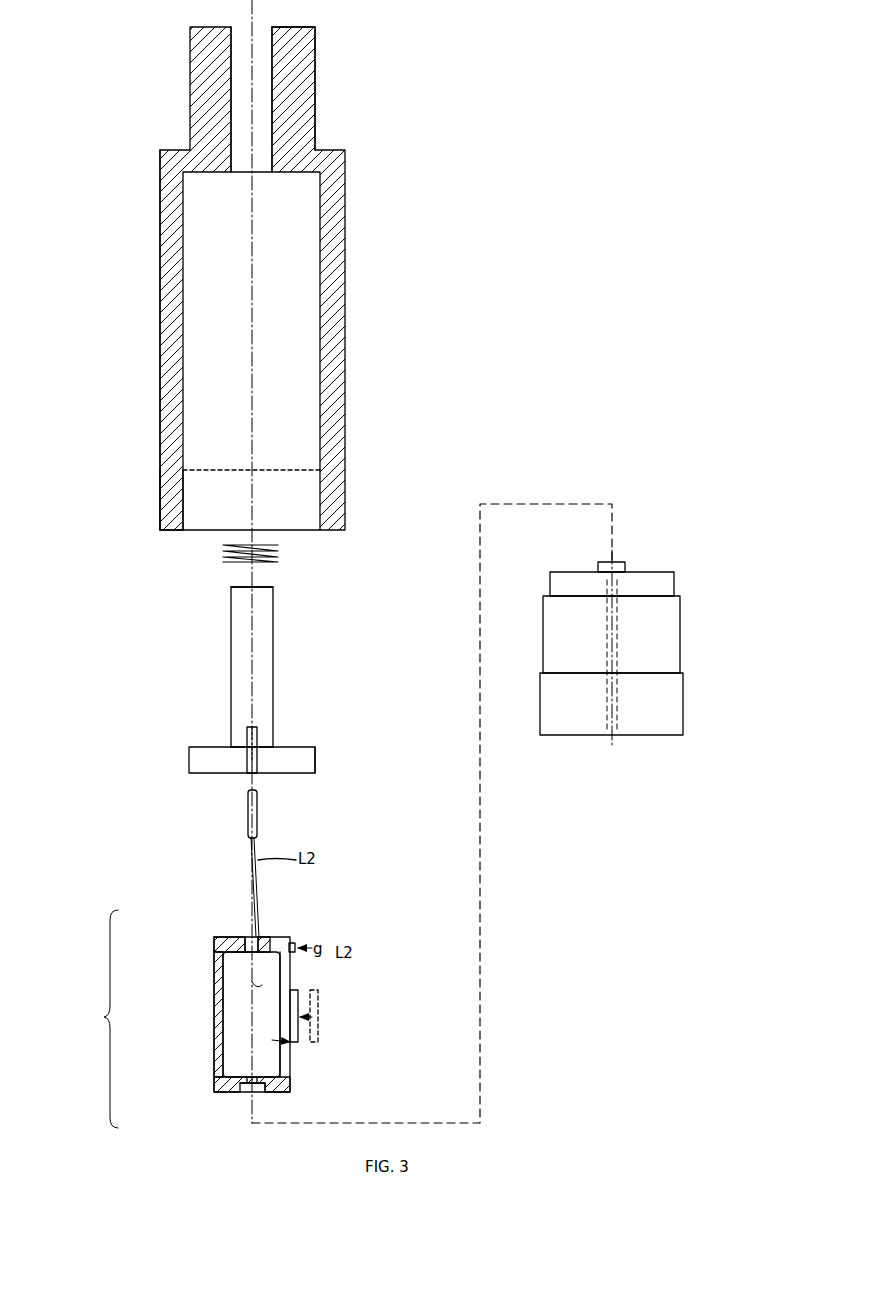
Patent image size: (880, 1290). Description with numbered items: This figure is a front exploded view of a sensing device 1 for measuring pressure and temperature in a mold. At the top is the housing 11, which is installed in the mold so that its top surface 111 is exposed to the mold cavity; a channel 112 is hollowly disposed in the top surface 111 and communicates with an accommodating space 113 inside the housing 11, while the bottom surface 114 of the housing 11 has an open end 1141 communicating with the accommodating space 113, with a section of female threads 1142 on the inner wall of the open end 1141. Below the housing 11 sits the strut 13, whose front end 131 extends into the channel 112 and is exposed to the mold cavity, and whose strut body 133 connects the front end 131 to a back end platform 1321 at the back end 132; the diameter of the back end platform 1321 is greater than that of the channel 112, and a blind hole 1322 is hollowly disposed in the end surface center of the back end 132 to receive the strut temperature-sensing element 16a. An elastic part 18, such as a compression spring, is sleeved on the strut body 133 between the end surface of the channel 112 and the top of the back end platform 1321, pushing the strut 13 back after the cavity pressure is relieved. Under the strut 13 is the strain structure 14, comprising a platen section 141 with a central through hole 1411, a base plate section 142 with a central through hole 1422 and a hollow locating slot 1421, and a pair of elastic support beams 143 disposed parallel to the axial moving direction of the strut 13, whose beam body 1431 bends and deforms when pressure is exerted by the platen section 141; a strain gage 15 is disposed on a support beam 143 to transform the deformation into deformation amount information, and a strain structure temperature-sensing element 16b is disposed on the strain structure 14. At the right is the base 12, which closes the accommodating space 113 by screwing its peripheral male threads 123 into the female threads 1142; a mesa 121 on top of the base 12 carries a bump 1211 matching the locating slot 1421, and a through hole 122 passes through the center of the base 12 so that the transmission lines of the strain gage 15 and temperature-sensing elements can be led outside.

The sensing device 1 is at (231, 300).
The housing 11 is at (237, 300).
The top surface 111 is at (298, 30).
The channel 112 is at (243, 32).
The accommodating space 113 is at (195, 330).
The bottom surface 114 is at (175, 530).
The open end 1141 is at (206, 535).
The female threads 1142 is at (322, 498).
The base 12 is at (649, 624).
The mesa 121 is at (650, 572).
The bump 1211 is at (622, 562).
The through hole 122 is at (620, 607).
The male threads 123 is at (683, 700).
The strut 13 is at (257, 691).
The front end 131 is at (235, 587).
The back end 132 is at (235, 775).
The back end platform 1321 is at (318, 758).
The blind hole 1322 is at (262, 780).
The strut body 133 is at (230, 690).
The strain structure 14 is at (209, 1011).
The platen section 141 is at (195, 915).
The through hole 1411 is at (247, 937).
The base plate section 142 is at (229, 1102).
The locating slot 1421 is at (245, 1092).
The through hole 1422 is at (262, 1062).
The support beams 143 is at (231, 1014).
The beam body 1431 is at (215, 1020).
The strain gage 15 is at (295, 990).
The strut temperature-sensing element 16a is at (262, 805).
The strain structure temperature-sensing element 16b is at (295, 945).
The elastic part 18 is at (255, 562).